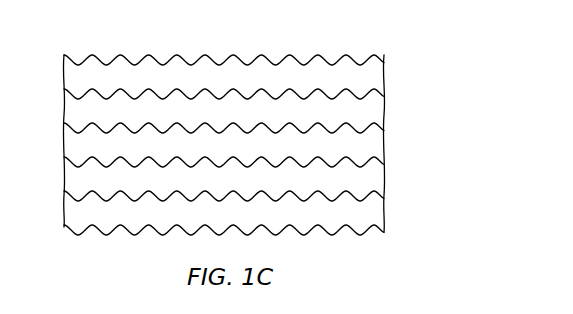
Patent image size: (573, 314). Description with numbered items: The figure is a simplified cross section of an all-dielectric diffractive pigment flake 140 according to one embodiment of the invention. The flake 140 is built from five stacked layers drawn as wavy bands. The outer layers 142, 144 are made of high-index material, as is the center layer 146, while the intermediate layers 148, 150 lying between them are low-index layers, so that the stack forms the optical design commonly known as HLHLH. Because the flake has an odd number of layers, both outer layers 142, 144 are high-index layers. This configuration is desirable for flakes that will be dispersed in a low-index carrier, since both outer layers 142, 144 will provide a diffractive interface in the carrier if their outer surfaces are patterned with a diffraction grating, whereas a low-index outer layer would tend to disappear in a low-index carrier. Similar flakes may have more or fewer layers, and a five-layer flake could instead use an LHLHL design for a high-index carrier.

The all-dielectric diffractive pigment flake 140 is at (457, 71).
The outer layer 142 is at (377, 79).
The intermediate layer 148 is at (377, 113).
The center layer 146 is at (377, 147).
The intermediate layer 150 is at (377, 181).
The outer layer 144 is at (377, 215).